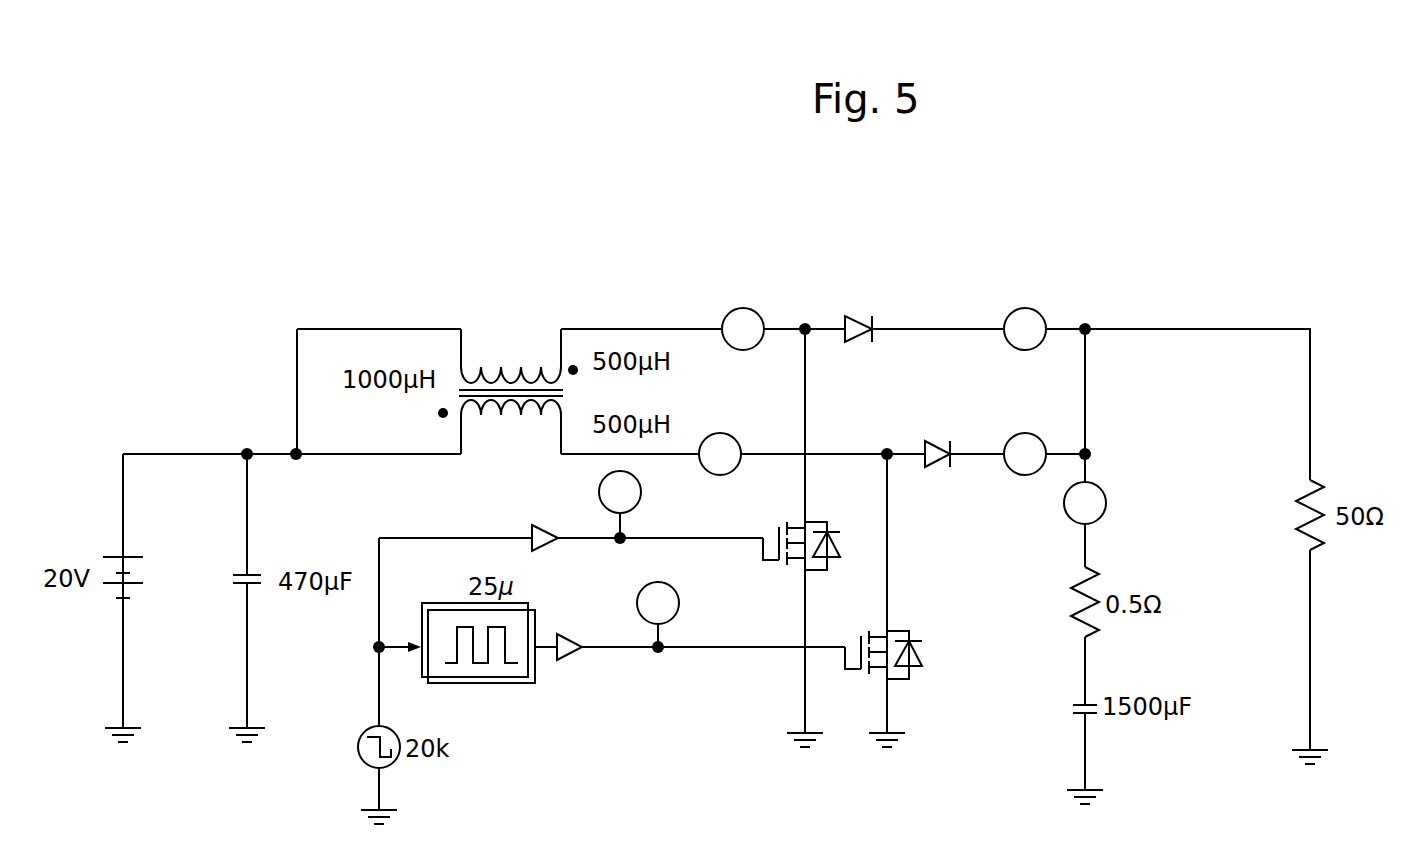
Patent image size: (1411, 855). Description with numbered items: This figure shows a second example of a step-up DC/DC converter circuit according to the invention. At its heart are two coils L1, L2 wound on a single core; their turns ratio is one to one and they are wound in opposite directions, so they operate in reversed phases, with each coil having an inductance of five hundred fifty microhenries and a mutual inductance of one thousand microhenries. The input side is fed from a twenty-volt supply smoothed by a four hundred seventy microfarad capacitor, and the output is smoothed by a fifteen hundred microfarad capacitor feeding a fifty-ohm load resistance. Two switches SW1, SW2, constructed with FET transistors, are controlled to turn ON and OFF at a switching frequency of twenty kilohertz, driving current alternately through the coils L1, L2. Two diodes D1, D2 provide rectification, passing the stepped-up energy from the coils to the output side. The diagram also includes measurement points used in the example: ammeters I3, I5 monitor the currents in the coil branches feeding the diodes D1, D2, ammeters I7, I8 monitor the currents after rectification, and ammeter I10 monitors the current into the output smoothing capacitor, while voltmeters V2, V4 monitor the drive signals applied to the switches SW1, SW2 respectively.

The coil L1 is at (511, 355).
The coil L2 is at (511, 427).
The ammeter I3 is at (743, 313).
The ammeter I5 is at (720, 439).
The ammeter I7 is at (1025, 314).
The ammeter I8 is at (1025, 440).
The ammeter I10 is at (1107, 503).
The diode D1 is at (855, 312).
The diode D2 is at (925, 440).
The voltmeter V2 is at (640, 504).
The voltmeter V4 is at (678, 614).
The switch SW1 is at (776, 538).
The switch SW2 is at (868, 600).